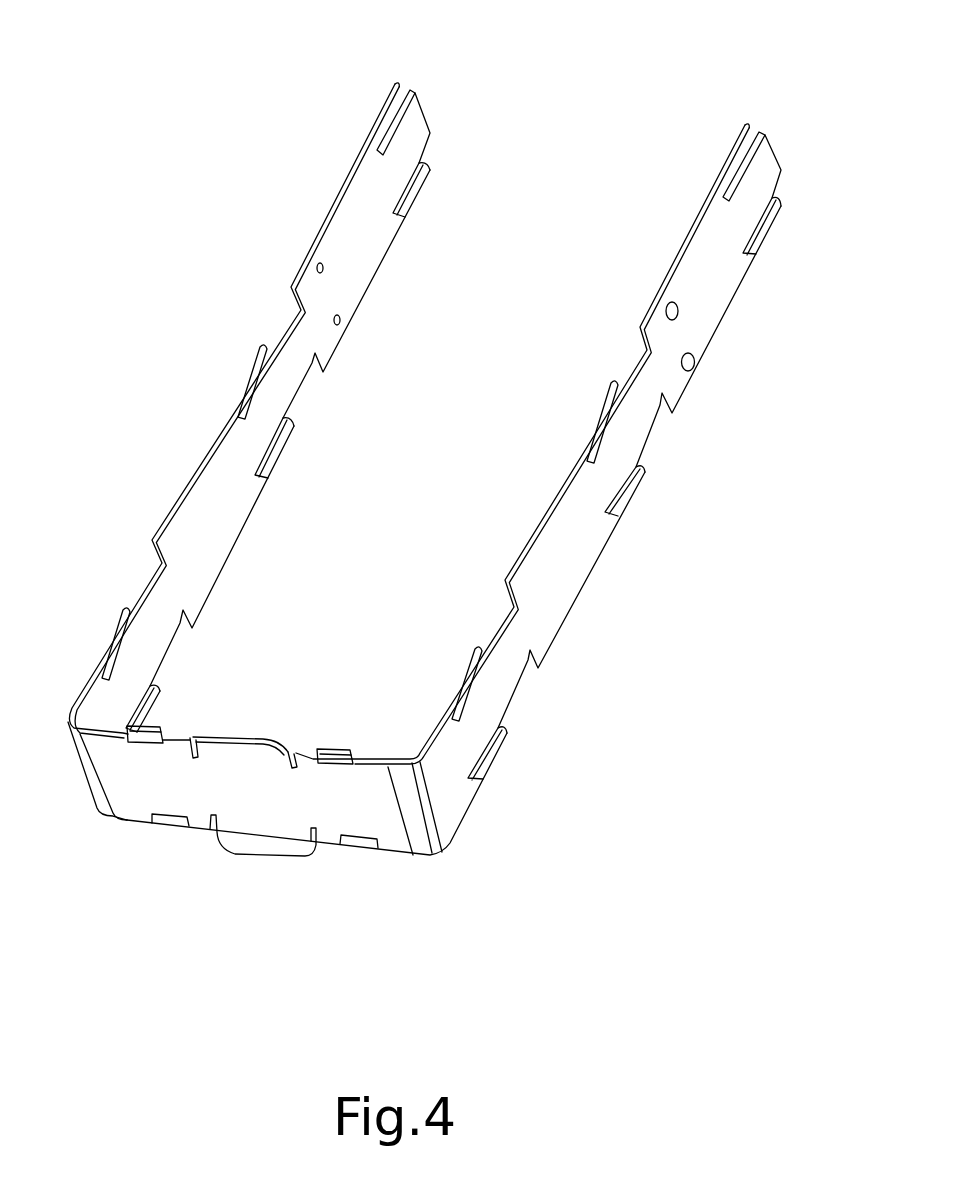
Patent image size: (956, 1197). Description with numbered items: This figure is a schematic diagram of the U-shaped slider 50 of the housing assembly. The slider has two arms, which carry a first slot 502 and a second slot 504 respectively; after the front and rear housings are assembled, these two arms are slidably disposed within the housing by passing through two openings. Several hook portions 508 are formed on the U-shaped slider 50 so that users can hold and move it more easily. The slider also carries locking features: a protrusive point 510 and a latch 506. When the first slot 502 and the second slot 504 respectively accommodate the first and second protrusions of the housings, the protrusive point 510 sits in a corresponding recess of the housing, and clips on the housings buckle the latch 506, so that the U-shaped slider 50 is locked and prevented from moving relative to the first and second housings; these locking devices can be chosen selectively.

The U-shaped slider 50 is at (727, 861).
The first slot 502 is at (400, 82).
The second slot 504 is at (431, 166).
The latch 506 is at (153, 740).
The hook portion 508 is at (277, 738).
The protrusive point 510 is at (320, 264).